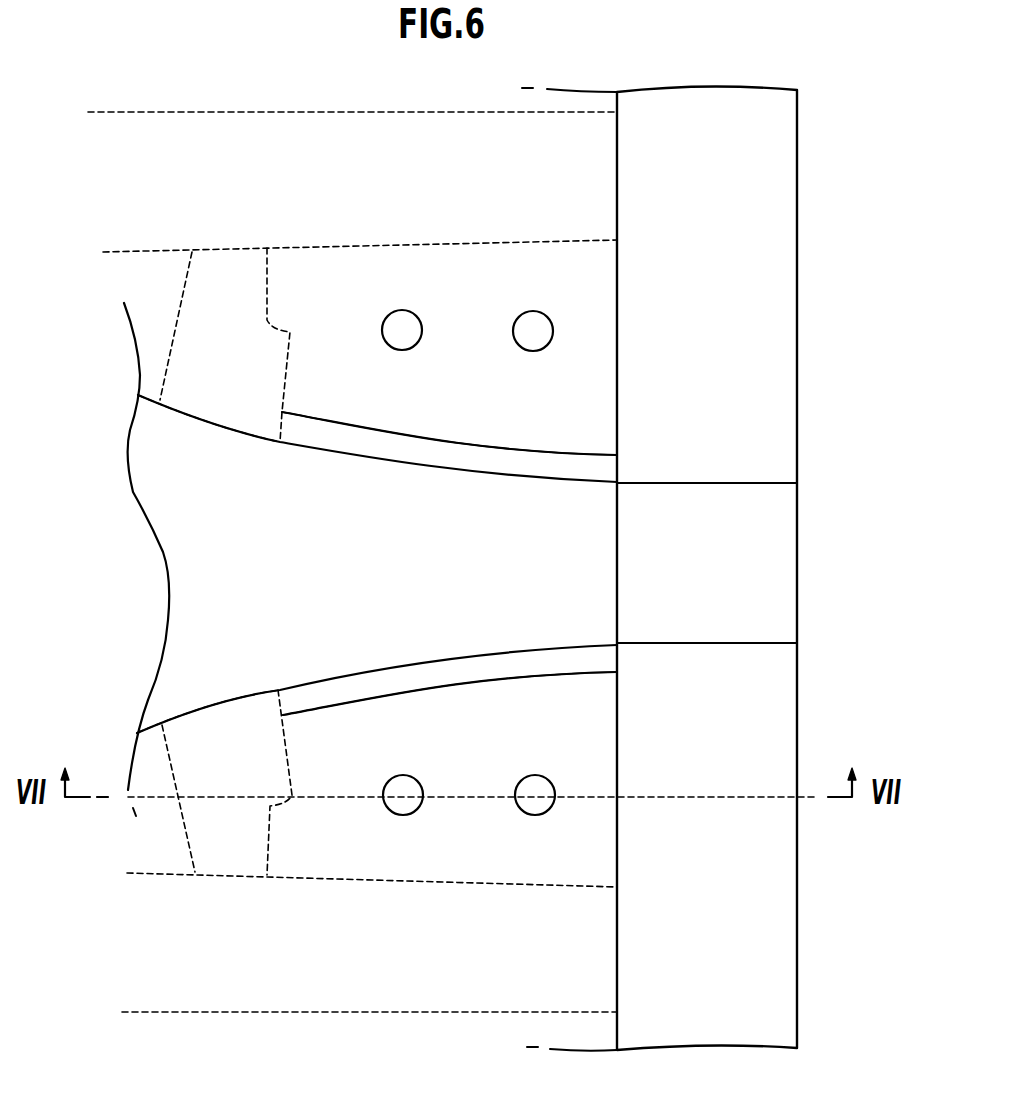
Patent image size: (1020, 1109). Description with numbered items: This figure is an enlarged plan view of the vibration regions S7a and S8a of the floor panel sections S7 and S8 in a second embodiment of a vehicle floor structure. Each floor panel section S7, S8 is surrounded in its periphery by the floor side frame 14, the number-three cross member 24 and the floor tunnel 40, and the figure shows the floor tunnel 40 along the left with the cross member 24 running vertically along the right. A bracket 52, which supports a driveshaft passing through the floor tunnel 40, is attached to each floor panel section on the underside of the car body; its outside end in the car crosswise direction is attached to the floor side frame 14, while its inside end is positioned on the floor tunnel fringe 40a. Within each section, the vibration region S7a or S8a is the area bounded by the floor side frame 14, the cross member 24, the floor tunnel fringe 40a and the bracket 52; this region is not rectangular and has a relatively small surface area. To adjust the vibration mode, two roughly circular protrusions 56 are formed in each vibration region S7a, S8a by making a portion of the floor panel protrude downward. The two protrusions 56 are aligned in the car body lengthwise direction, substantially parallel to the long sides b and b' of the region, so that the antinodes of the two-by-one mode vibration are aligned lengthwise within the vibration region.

The floor side frame 14 is at (228, 112).
The No. 3 cross member 24 is at (797, 157).
The floor tunnel 40 is at (192, 635).
The floor tunnel fringe 40a is at (400, 458).
The bracket 52 is at (178, 306).
The protrusions 56 is at (532, 310).
The floor panel section S7 is at (172, 853).
The floor panel section S8 is at (168, 265).
The vibration region S7a is at (533, 752).
The vibration region S8a is at (570, 360).
The long side b is at (360, 568).
The long side b' is at (469, 563).